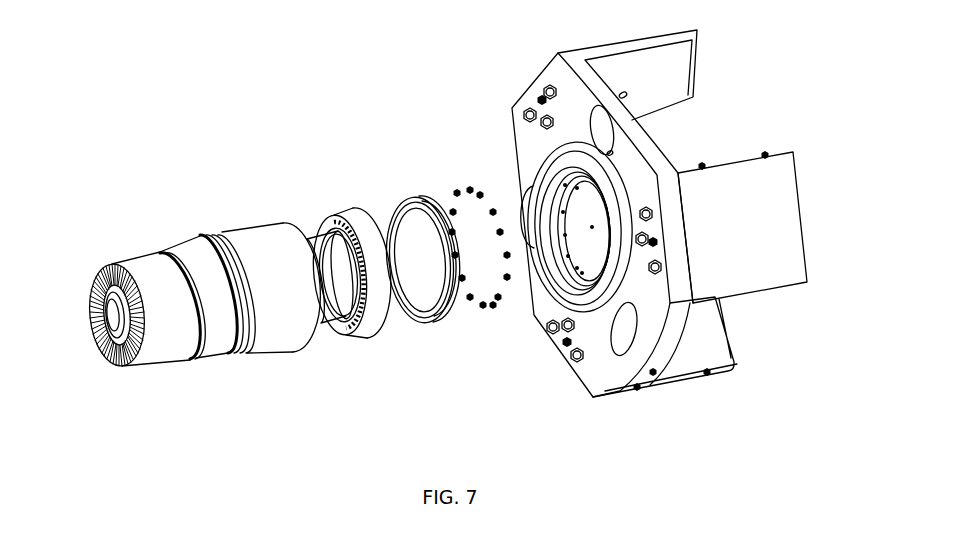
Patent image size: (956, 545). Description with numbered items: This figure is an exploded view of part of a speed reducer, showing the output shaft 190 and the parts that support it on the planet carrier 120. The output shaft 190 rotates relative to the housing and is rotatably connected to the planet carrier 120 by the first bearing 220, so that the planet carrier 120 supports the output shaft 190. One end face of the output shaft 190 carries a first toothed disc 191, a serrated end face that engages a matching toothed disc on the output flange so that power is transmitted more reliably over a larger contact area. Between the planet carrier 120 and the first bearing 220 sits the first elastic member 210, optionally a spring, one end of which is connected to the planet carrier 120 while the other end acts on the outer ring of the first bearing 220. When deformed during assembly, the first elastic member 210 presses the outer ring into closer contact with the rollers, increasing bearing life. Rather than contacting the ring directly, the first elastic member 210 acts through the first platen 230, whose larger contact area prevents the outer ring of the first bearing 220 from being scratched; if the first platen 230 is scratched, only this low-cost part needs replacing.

The planet carrier 120 is at (683, 362).
The output shaft 190 is at (217, 347).
The first toothed disc 191 is at (119, 358).
The first elastic member 210 is at (492, 307).
The first bearing 220 is at (357, 337).
The first platen 230 is at (420, 313).